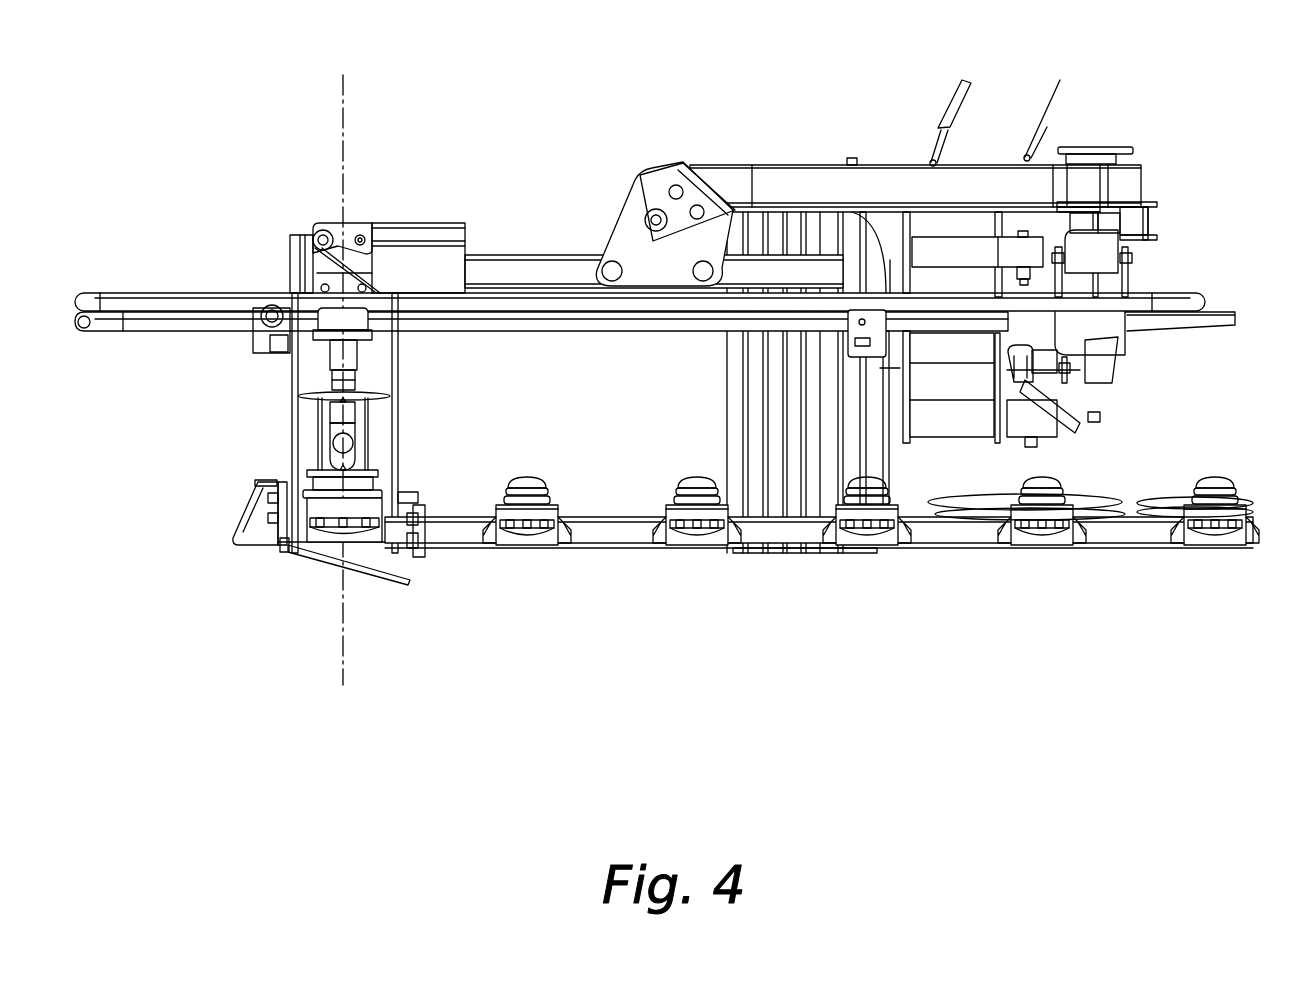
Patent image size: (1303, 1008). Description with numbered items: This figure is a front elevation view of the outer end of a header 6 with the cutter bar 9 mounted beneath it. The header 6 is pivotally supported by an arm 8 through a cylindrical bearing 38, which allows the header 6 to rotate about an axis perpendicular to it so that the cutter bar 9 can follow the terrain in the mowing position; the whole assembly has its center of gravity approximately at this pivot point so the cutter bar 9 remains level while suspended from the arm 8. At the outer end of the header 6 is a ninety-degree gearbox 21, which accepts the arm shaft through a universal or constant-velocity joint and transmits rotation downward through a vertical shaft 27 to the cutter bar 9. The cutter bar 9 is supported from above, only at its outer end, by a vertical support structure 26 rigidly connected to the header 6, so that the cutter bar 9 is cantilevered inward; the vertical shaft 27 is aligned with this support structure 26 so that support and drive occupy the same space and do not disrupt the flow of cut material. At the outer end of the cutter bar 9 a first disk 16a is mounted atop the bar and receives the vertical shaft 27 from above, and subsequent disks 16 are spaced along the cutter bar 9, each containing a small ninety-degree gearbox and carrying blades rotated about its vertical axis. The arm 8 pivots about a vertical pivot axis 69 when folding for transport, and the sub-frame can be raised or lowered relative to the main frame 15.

The header 6 is at (485, 273).
The arm 8 is at (817, 187).
The cutter bar 9 is at (465, 520).
The main frame 15 is at (977, 113).
The cutter disk 16 is at (580, 547).
The first disk 16a is at (413, 490).
The 90° gearbox 21 is at (350, 228).
The vertical support structure 26 is at (293, 368).
The vertical shaft 27 is at (350, 363).
The cylindrical bearing 38 is at (648, 215).
The vertical pivot axis 69 is at (343, 608).